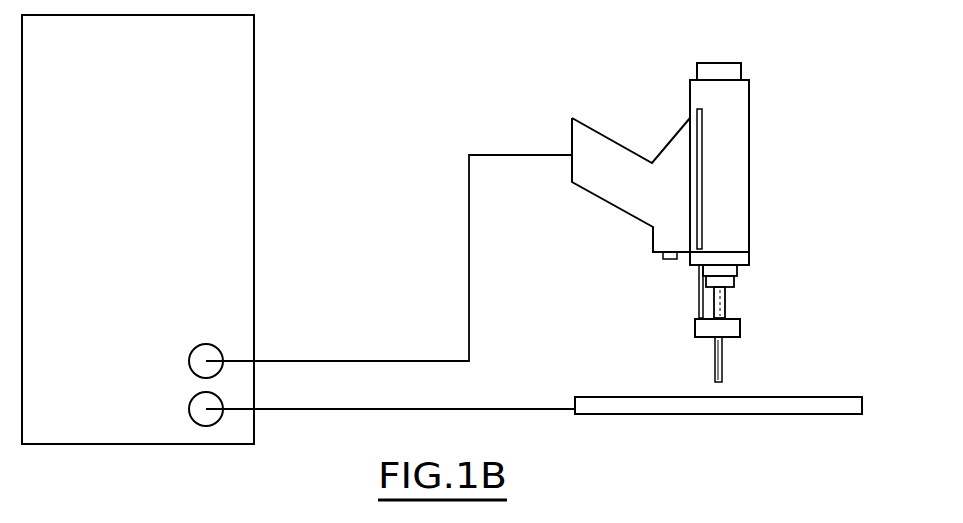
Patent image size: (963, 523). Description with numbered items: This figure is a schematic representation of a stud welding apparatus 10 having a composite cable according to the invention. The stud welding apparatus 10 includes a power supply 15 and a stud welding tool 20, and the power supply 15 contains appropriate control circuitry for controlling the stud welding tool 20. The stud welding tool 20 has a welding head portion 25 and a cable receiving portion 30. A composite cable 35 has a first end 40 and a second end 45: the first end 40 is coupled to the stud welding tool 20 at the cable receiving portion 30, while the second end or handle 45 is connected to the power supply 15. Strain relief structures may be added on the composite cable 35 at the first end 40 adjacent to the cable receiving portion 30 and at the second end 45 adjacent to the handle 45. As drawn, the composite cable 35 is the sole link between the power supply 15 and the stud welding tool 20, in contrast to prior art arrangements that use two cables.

The stud welding apparatus 10 is at (775, 67).
The power supply 15 is at (237, 146).
The stud welding tool 20 is at (749, 191).
The welding head portion 25 is at (740, 327).
The cable receiving portion 30 is at (584, 137).
The composite cable 35 is at (469, 219).
The first end 40 is at (550, 157).
The second end 45 is at (232, 360).